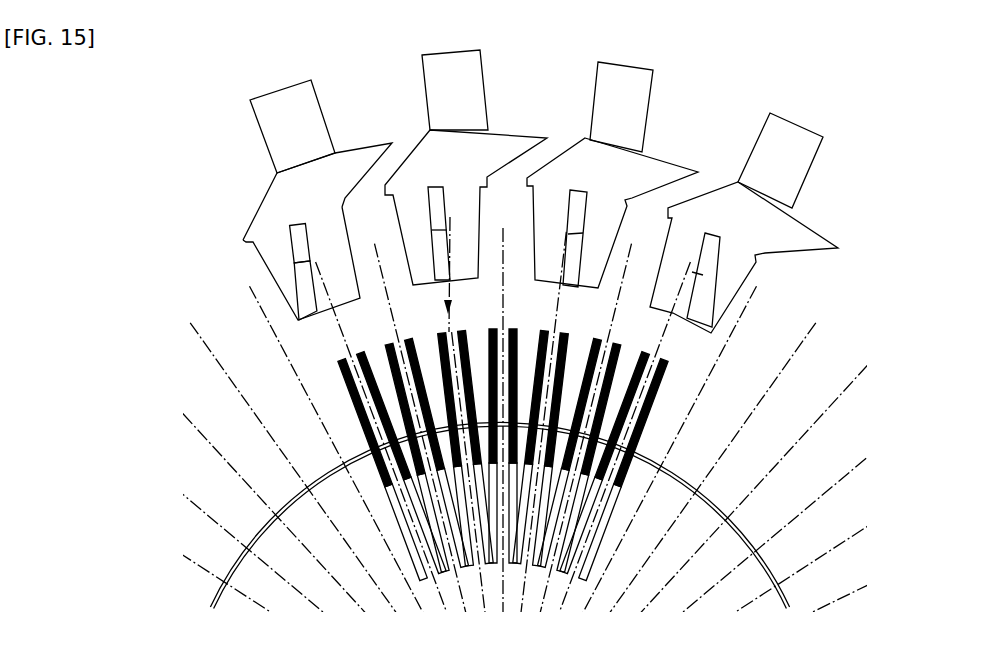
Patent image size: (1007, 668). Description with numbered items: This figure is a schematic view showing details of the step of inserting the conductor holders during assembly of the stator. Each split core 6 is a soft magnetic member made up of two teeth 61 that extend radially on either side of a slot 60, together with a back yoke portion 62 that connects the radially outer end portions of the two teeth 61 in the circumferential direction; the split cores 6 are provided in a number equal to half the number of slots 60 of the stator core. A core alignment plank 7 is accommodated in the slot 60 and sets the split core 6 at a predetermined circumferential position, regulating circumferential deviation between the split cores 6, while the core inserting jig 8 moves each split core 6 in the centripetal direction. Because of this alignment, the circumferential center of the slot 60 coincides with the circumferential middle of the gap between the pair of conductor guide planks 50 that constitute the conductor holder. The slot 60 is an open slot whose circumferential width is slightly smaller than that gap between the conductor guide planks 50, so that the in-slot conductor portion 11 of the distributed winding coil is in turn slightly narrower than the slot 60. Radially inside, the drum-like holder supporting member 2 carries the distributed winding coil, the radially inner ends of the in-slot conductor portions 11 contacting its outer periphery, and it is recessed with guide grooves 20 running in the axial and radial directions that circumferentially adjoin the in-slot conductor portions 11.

The holder supporting member 2 is at (713, 567).
The split core 6 is at (506, 203).
The core alignment plank 7 is at (288, 222).
The core inserting jig 8 is at (275, 108).
The in-slot conductor portion 11 is at (660, 388).
The guide groove 20 is at (597, 548).
The conductor guide plank 50 is at (643, 382).
The slot 60 is at (320, 290).
The tooth 61 is at (288, 270).
The back yoke portion 62 is at (288, 197).